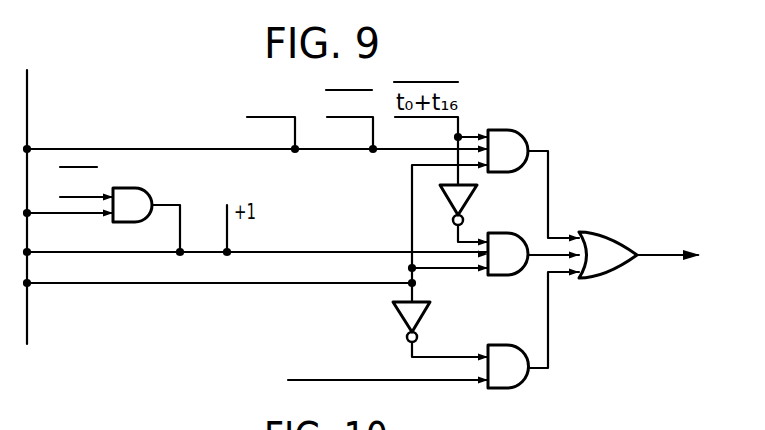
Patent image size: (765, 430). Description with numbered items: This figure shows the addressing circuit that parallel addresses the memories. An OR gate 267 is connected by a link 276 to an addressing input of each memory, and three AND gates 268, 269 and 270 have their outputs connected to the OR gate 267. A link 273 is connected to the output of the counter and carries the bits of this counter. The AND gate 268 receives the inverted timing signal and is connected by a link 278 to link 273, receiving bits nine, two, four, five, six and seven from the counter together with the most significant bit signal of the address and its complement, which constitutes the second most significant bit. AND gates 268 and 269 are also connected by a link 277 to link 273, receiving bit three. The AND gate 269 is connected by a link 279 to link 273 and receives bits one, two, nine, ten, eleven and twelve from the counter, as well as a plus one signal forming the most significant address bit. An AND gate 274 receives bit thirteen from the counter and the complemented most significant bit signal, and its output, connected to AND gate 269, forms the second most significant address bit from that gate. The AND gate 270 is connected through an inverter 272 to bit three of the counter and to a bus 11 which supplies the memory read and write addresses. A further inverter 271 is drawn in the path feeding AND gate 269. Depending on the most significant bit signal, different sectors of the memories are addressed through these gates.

The link 273 is at (29, 100).
The link 278 is at (131, 148).
The AND gate 274 is at (133, 200).
The link 279 is at (308, 250).
The link 277 is at (312, 284).
The AND gate 268 is at (511, 142).
The AND gate 269 is at (513, 264).
The AND gate 270 is at (506, 378).
The inverter 271 is at (462, 197).
The inverter 272 is at (416, 312).
The OR gate 267 is at (607, 246).
The link 276 is at (666, 259).
The bus 11 is at (364, 378).